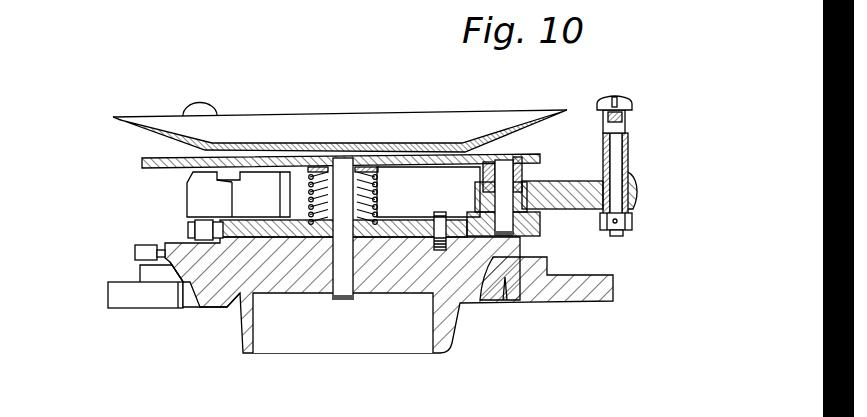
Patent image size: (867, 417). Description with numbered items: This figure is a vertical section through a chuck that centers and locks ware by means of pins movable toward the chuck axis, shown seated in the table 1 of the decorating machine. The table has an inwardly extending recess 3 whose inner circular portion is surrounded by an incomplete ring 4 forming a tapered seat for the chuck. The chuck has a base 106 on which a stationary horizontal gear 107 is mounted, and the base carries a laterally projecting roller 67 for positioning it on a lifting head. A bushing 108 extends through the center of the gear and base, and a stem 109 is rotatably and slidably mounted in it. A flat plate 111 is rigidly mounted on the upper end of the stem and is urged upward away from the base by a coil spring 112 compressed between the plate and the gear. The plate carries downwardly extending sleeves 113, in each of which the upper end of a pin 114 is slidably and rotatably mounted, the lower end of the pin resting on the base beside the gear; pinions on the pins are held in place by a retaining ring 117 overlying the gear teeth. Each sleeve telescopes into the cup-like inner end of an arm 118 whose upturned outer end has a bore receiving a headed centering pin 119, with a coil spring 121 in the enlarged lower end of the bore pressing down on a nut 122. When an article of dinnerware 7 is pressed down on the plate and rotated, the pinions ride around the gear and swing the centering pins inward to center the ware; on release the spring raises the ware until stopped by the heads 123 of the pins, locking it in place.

The table 1 is at (550, 292).
The recess 3 is at (504, 300).
The incomplete ring 4 is at (140, 271).
The article of dinnerware 7 is at (330, 123).
The roller 67 is at (135, 251).
The base 106 is at (213, 293).
The gear 107 is at (188, 228).
The bushing 108 is at (328, 292).
The stem 109 is at (343, 287).
The plate 111 is at (141, 161).
The coil spring 112 is at (380, 181).
The sleeve 113 is at (468, 158).
The pin 114 is at (505, 168).
The retaining ring 117 is at (243, 217).
The arm 118 is at (580, 181).
The centering pin 119 is at (617, 147).
The coil spring 121 is at (630, 214).
The nut 122 is at (630, 228).
The head 123 is at (623, 96).